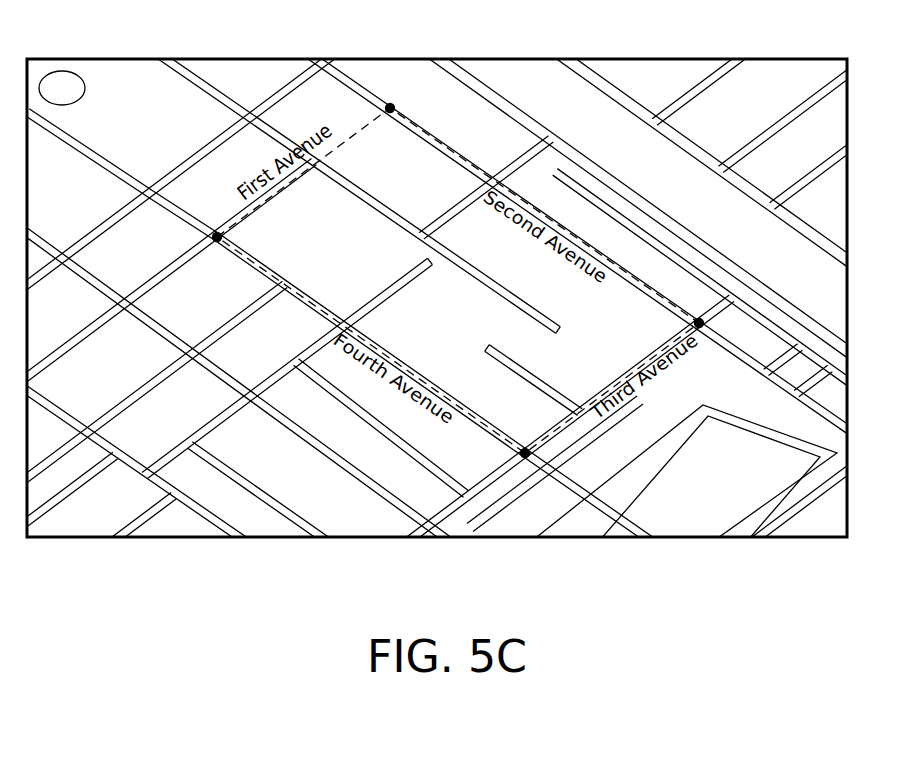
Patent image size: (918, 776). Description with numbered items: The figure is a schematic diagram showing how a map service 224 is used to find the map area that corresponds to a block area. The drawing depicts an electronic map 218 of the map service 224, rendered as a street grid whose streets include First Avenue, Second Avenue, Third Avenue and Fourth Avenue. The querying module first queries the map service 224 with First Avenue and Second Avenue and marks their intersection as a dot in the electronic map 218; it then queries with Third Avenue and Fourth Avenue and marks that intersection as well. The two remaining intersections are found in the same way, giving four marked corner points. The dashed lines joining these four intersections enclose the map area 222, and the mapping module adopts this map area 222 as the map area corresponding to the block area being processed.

The electronic map 218 is at (784, 82).
The map area 222 is at (478, 172).
The map service 224 is at (835, 596).